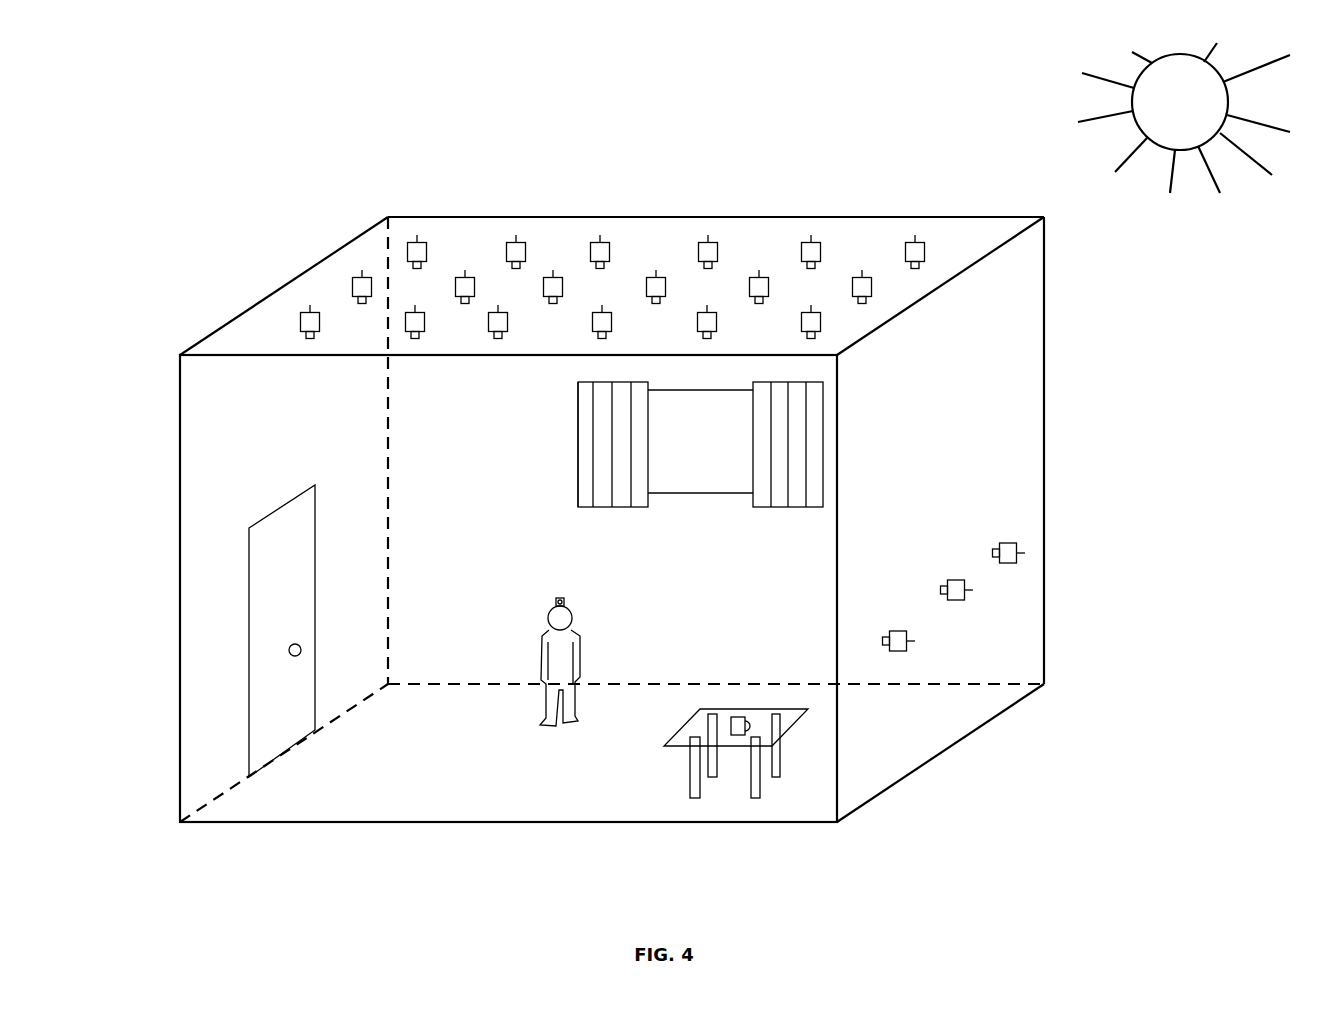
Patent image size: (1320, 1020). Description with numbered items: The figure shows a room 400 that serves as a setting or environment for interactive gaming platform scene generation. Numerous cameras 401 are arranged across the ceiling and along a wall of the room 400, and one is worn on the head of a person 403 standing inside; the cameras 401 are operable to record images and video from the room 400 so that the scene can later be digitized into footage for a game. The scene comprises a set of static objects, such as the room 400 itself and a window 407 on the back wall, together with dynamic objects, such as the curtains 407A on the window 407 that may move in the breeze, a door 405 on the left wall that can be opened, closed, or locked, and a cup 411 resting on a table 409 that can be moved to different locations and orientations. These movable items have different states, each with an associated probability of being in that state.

The room 400 is at (150, 105).
The cameras 401 is at (335, 276).
The person 403 is at (542, 648).
The door 405 is at (275, 510).
The window 407 is at (700, 444).
The curtains 407A is at (583, 507).
The table 409 is at (674, 744).
The cup 411 is at (742, 717).